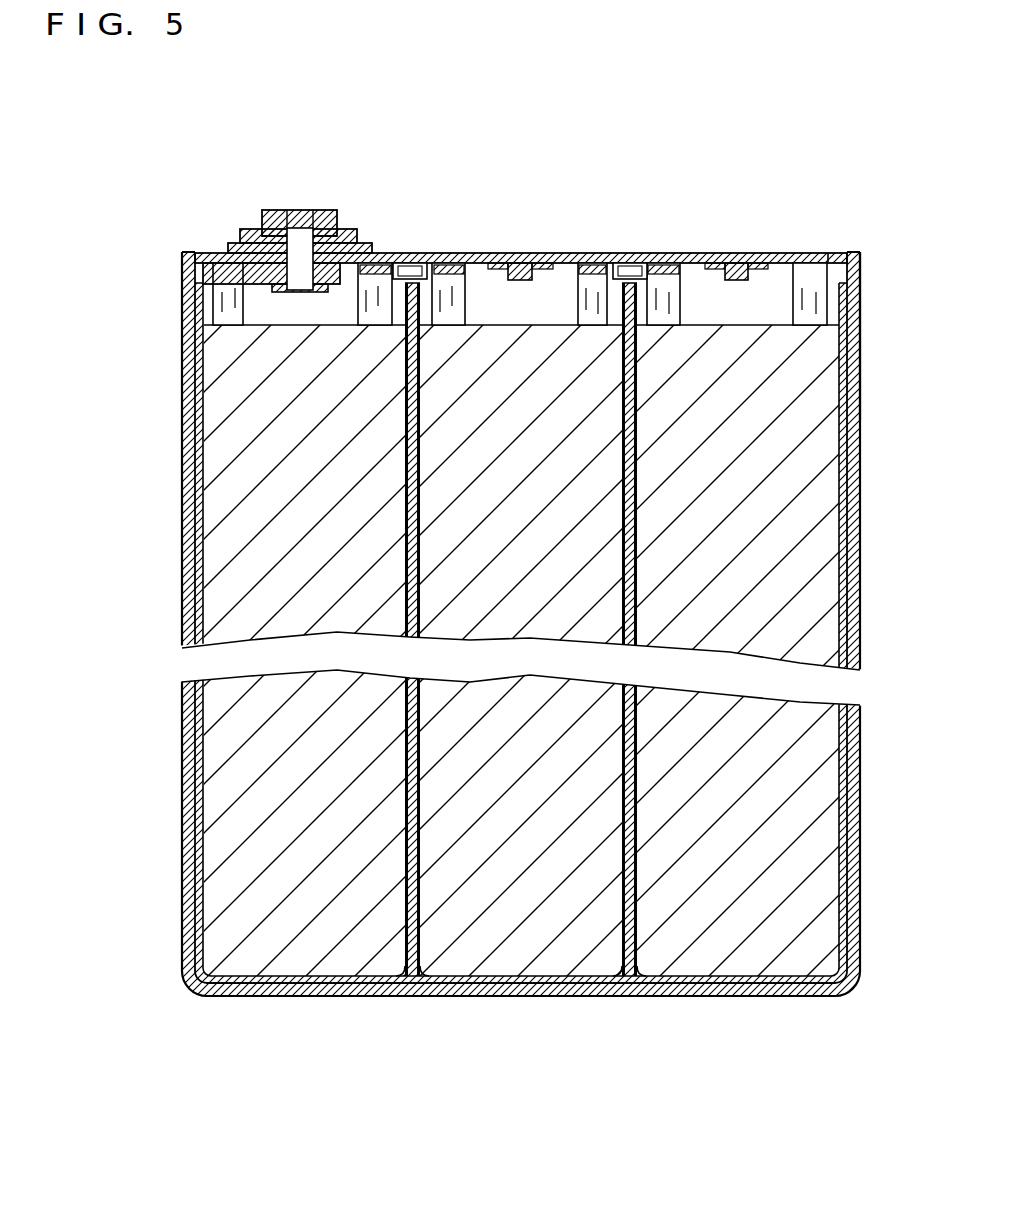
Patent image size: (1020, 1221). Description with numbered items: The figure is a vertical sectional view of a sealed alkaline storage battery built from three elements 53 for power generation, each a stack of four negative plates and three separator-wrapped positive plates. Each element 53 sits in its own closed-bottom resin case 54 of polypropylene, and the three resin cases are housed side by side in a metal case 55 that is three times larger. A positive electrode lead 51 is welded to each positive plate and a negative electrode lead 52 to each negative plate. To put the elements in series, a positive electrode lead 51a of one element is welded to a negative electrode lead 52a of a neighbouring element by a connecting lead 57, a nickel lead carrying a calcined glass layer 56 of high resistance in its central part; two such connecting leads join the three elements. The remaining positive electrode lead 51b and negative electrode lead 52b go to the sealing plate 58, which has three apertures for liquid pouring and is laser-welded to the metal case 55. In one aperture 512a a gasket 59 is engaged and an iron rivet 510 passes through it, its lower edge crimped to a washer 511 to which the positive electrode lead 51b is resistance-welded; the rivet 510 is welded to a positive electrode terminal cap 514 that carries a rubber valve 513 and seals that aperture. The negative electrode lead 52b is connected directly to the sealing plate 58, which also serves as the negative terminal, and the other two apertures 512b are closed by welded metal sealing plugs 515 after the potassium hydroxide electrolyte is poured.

The positive electrode lead 51 is at (491, 623).
The positive electrode lead 51a is at (198, 339).
The positive electrode lead 51b is at (200, 312).
The negative electrode lead 52 is at (521, 223).
The negative electrode lead 52a is at (588, 293).
The negative electrode lead 52b is at (778, 254).
The element for power generation 53 is at (306, 968).
The closed-bottom resin case 54 is at (852, 262).
The metal case 55 is at (800, 990).
The glass layer 56 is at (414, 268).
The connecting lead 57 is at (378, 266).
The sealing plate 58 is at (828, 253).
The gasket 59 is at (232, 249).
The iron rivet 510 is at (242, 238).
The washer 511 is at (250, 286).
The aperture for liquid pouring 512a is at (302, 250).
The apertures for liquid pouring 512b is at (525, 270).
The rubber valve 513 is at (289, 210).
The positive electrode terminal cap 514 is at (336, 228).
The metal sealing plug 515 is at (578, 282).